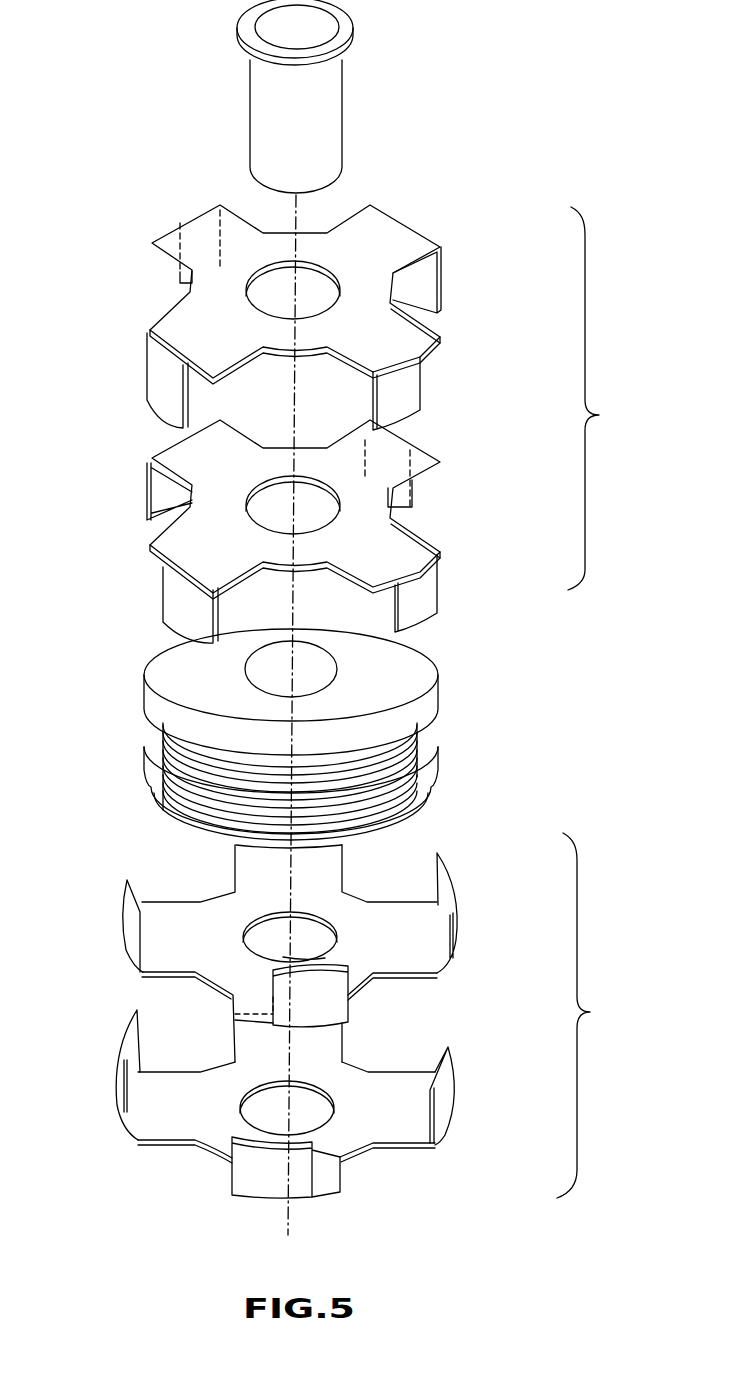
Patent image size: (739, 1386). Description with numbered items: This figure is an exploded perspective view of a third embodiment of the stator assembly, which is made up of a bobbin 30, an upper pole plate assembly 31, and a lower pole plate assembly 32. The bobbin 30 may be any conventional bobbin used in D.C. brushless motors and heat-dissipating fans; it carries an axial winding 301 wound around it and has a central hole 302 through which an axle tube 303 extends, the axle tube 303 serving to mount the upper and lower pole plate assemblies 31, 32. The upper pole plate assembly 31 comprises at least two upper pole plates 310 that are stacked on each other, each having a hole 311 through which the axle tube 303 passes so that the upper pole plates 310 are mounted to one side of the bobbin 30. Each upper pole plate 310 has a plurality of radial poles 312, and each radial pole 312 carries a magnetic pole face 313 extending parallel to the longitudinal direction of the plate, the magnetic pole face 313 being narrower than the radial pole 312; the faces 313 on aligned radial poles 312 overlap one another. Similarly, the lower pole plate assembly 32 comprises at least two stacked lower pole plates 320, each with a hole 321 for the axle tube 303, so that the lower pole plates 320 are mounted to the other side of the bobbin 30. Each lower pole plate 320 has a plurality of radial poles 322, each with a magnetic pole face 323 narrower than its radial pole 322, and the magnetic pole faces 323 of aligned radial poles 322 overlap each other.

The bobbin 30 is at (163, 660).
The axial winding 301 is at (420, 755).
The central hole 302 is at (317, 672).
The axle tube 303 is at (330, 108).
The upper pole plate assembly 31 is at (597, 398).
The upper pole plate 310 is at (383, 296).
The hole 311 is at (277, 290).
The radial pole 312 is at (423, 230).
The magnetic pole face 313 is at (440, 300).
The lower pole plate assembly 32 is at (592, 1015).
The lower pole plate 320 is at (362, 963).
The hole 321 is at (265, 933).
The radial pole 322 is at (450, 963).
The magnetic pole face 323 is at (458, 888).